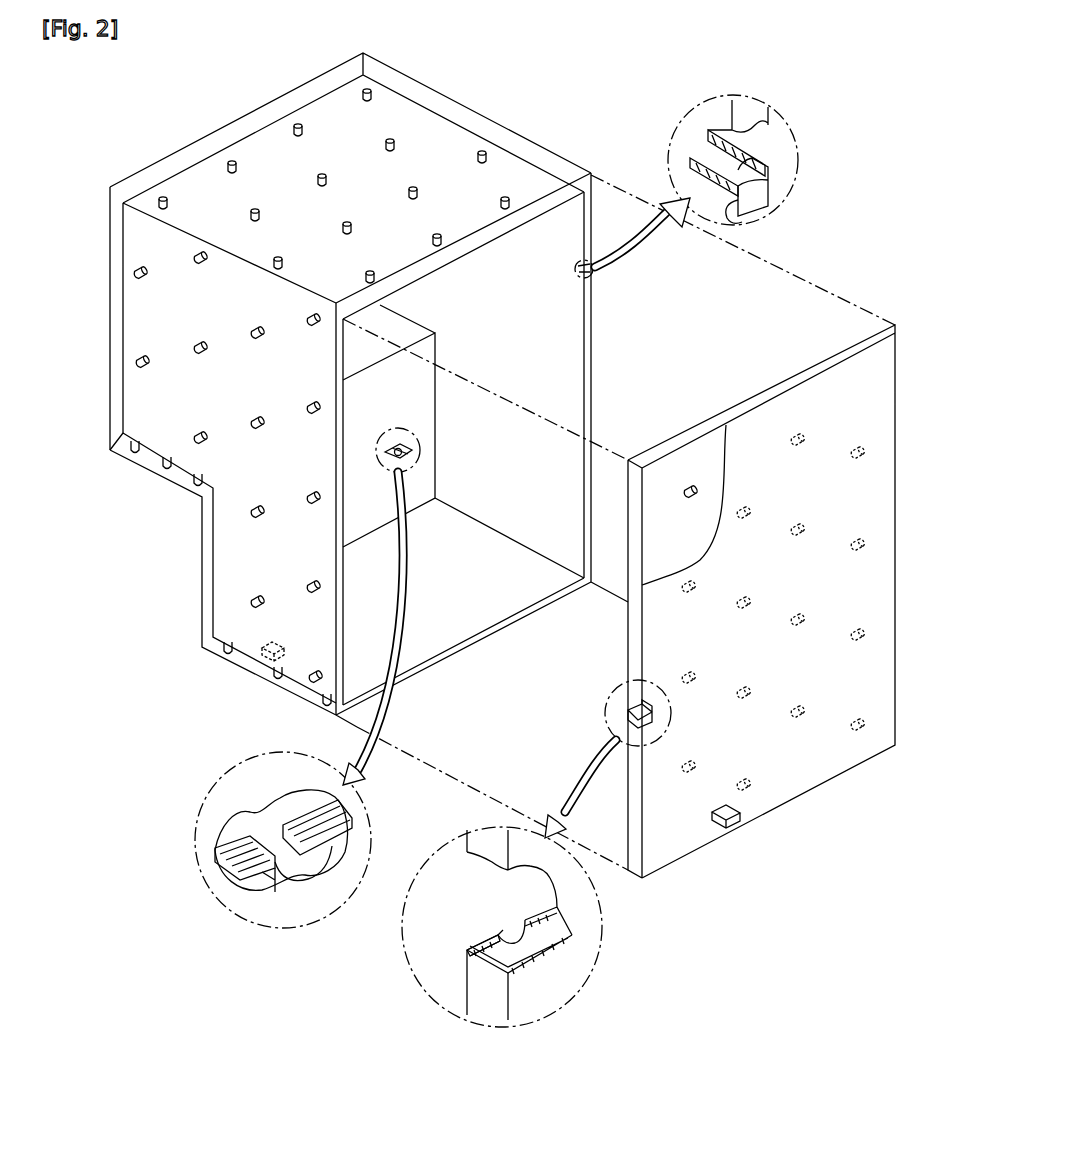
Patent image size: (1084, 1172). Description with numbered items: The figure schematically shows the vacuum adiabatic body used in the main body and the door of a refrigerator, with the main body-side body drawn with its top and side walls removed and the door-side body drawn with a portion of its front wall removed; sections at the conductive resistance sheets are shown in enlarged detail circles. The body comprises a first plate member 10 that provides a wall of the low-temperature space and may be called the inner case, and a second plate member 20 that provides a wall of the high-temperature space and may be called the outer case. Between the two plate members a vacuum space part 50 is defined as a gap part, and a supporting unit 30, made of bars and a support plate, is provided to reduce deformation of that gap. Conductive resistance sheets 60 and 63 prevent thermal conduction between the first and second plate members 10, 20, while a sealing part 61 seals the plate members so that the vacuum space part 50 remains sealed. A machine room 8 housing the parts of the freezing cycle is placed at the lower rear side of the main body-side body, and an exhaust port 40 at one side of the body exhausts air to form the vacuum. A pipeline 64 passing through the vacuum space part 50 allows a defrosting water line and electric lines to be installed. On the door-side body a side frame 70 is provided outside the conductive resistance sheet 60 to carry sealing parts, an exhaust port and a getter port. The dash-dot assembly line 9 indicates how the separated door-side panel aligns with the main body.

The machine room 8 is at (163, 534).
The assembly line 9 is at (530, 388).
The first plate member 10 is at (575, 407).
The second plate member 20 is at (518, 130).
The supporting unit 30 is at (132, 278).
The exhaust port 40 is at (258, 656).
The vacuum space part 50 is at (140, 253).
The conductive resistance sheet 60 is at (760, 190).
The sealing part 61 is at (727, 214).
The conductive resistance sheet 63 is at (215, 849).
The pipeline 64 is at (300, 856).
The side frame 70 is at (478, 946).